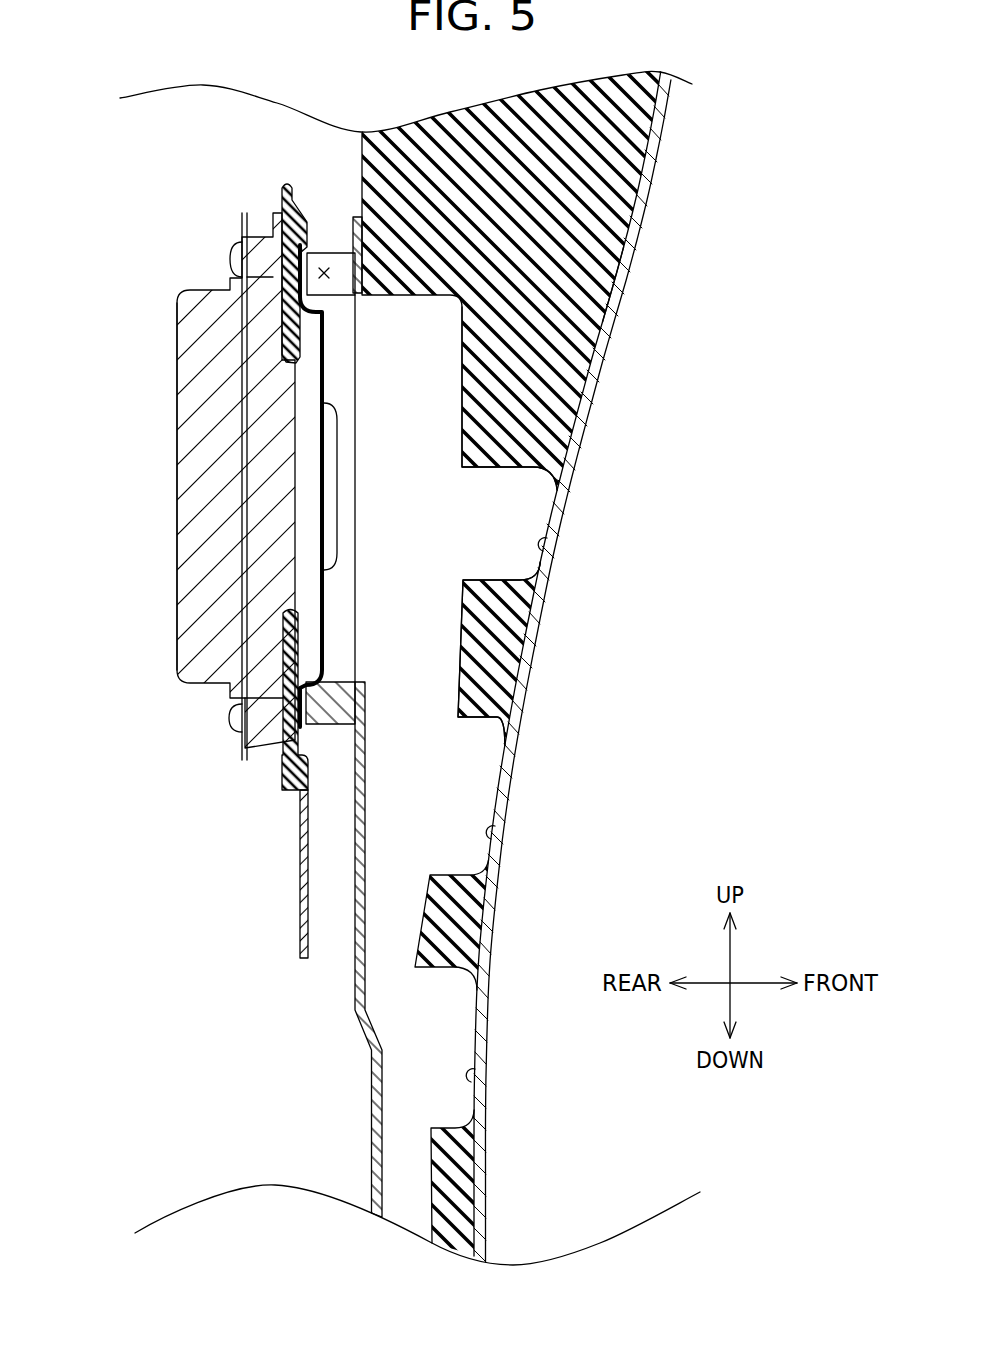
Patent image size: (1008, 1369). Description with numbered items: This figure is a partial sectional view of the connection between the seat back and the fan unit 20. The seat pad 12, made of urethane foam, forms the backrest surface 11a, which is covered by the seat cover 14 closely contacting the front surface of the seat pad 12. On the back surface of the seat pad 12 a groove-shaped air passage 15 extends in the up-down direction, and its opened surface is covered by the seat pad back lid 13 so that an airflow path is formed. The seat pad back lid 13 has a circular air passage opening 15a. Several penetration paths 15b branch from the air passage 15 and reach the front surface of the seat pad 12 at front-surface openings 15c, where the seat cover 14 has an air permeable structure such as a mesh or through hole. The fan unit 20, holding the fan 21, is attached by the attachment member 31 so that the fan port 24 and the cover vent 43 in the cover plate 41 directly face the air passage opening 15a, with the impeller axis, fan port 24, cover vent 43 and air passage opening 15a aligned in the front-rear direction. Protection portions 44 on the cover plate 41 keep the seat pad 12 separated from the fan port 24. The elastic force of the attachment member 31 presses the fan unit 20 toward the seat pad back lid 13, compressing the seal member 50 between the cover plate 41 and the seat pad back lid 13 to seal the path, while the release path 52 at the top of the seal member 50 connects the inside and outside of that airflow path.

The backrest surface 11a is at (654, 186).
The seat pad 12 is at (534, 92).
The seat pad back lid 13 is at (357, 216).
The seat cover 14 is at (621, 278).
The air passage 15 is at (420, 750).
The air passage opening 15a is at (363, 487).
The penetration path 15b is at (498, 518).
The front-surface opening 15c is at (549, 548).
The fan unit 20 is at (172, 521).
The fan 21 is at (211, 290).
The fan port 24 is at (299, 508).
The attachment member 31 is at (299, 898).
The cover plate 41 is at (320, 377).
The cover vent 43 is at (307, 487).
The protection portion 44 is at (328, 560).
The seal member 50 is at (345, 252).
The release path 52 is at (323, 265).